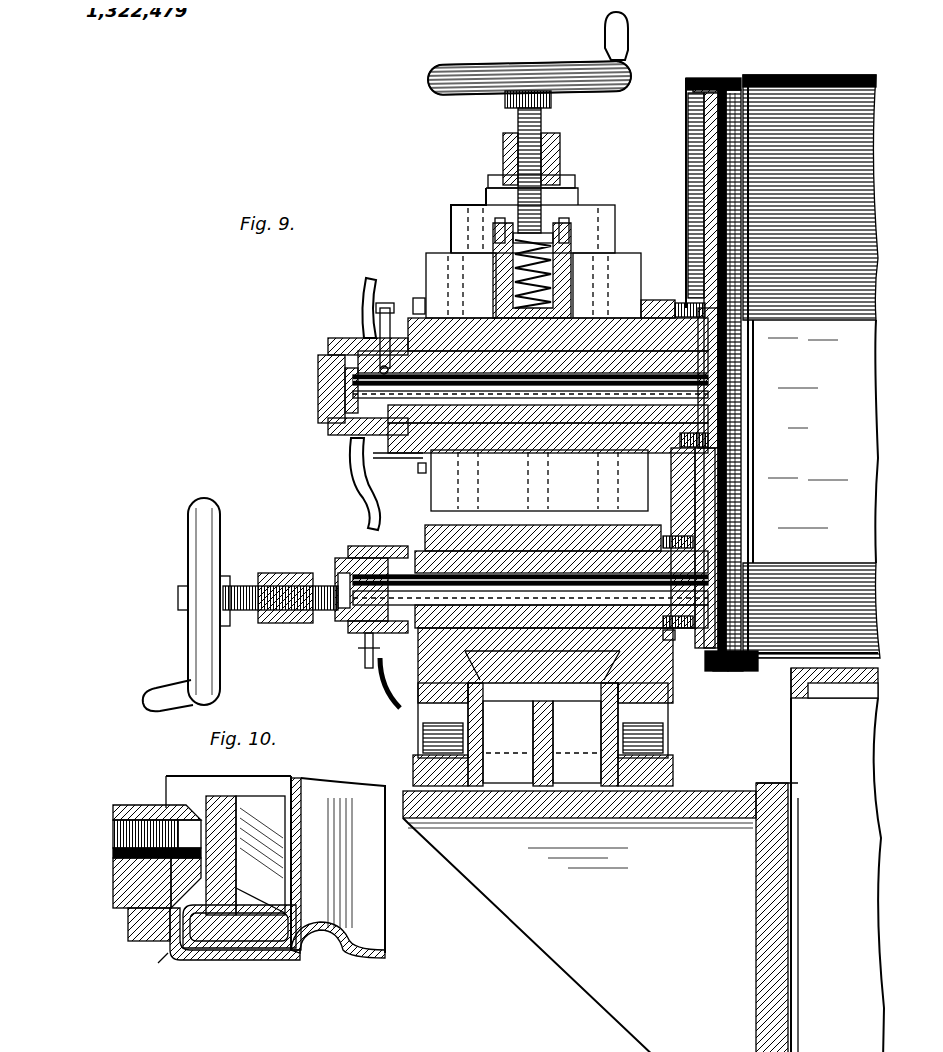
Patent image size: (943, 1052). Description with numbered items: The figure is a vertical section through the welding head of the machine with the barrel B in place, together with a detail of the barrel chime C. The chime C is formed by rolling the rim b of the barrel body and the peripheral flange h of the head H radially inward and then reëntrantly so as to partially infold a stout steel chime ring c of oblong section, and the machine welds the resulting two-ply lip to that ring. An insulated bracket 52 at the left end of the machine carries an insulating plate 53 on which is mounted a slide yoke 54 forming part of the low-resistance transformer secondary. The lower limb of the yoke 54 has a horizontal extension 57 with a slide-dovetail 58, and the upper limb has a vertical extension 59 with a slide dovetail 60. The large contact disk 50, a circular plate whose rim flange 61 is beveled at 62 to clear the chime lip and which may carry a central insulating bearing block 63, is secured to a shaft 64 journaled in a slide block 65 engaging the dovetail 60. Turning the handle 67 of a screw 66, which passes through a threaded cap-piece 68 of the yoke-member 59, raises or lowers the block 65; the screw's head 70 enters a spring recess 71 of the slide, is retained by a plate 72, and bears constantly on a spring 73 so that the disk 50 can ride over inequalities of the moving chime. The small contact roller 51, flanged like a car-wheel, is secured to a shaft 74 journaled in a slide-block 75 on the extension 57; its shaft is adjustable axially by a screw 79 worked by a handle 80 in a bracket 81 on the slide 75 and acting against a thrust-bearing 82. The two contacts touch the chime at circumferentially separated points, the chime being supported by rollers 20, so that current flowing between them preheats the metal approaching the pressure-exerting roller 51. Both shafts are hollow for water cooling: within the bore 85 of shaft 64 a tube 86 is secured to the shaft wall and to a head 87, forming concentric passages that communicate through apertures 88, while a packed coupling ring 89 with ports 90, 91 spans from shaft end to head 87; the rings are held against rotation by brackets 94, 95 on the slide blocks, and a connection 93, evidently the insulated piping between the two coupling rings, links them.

In FIG. 9, the rollers 20 is at (745, 665).
In FIG. 9, the contact disk 50 is at (710, 500).
In FIG. 10, the contact disk 50 is at (215, 795).
In FIG. 9, the contact roller 51 is at (712, 550).
In FIG. 10, the contact roller 51 is at (152, 797).
In FIG. 9, the bracket 52 is at (570, 940).
In FIG. 9, the insulating plate 53 is at (680, 778).
In FIG. 9, the slide yoke 54 is at (690, 740).
In FIG. 9, the horizontal extension 57 is at (450, 695).
In FIG. 9, the horizontal slide-dovetail 58 is at (508, 650).
In FIG. 9, the vertical extension 59 is at (445, 205).
In FIG. 9, the slide dovetail 60 is at (471, 195).
In FIG. 9, the rim flange 61 is at (728, 665).
In FIG. 10, the rim flange 61 is at (260, 860).
In FIG. 9, the bevel 62 is at (716, 665).
In FIG. 10, the bevel 62 is at (225, 905).
In FIG. 9, the insulating bearing block 63 is at (720, 362).
In FIG. 9, the shaft 64 is at (630, 310).
In FIG. 9, the slide block 65 is at (640, 290).
In FIG. 9, the screw 66 is at (536, 113).
In FIG. 9, the handle 67 is at (552, 60).
In FIG. 9, the cap-piece 68 is at (553, 151).
In FIG. 9, the head 70 is at (557, 212).
In FIG. 9, the spring recess 71 is at (505, 245).
In FIG. 9, the plate 72 is at (560, 232).
In FIG. 9, the spring 73 is at (560, 265).
In FIG. 9, the shaft 74 is at (560, 543).
In FIG. 9, the slide-block 75 is at (480, 517).
In FIG. 9, the screw 79 is at (238, 578).
In FIG. 9, the handle 80 is at (207, 497).
In FIG. 9, the bracket 81 is at (268, 565).
In FIG. 9, the thrust-bearing 82 is at (328, 568).
In FIG. 9, the bore 85 is at (434, 312).
In FIG. 9, the tube 86 is at (572, 343).
In FIG. 9, the head 87 is at (310, 380).
In FIG. 9, the apertures 88 is at (610, 445).
In FIG. 9, the coupling ring 89 is at (342, 330).
In FIG. 9, the port 90 is at (380, 300).
In FIG. 9, the port 91 is at (325, 437).
In FIG. 9, the link 93 is at (340, 487).
In FIG. 9, the bracket 94 is at (395, 452).
In FIG. 9, the bracket 95 is at (372, 660).
In FIG. 9, the barrel B is at (795, 70).
In FIG. 10, the barrel B is at (360, 950).
In FIG. 9, the chime C is at (697, 68).
In FIG. 10, the chime C is at (210, 953).
In FIG. 9, the head H is at (725, 395).
In FIG. 10, the head H is at (295, 870).
In FIG. 9, the rim b is at (712, 665).
In FIG. 10, the rim b is at (272, 945).
In FIG. 9, the chime ring c is at (702, 665).
In FIG. 10, the chime ring c is at (200, 948).
In FIG. 9, the peripheral flange h is at (700, 665).
In FIG. 10, the peripheral flange h is at (247, 950).